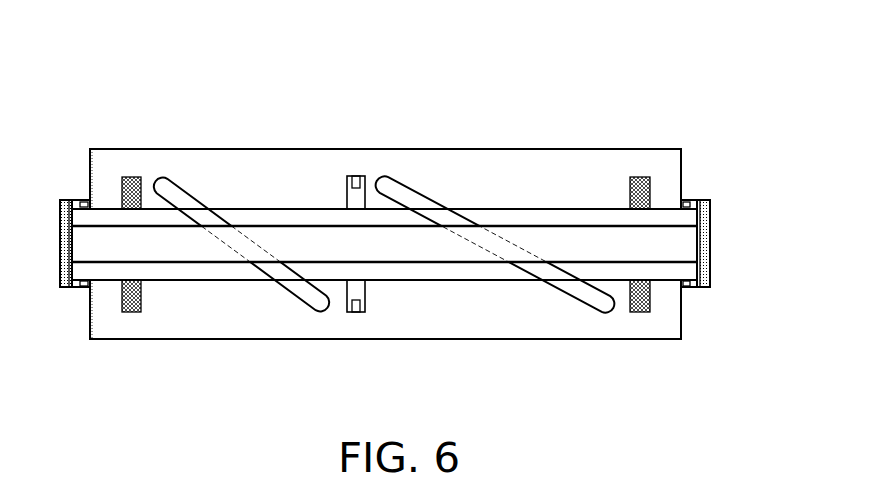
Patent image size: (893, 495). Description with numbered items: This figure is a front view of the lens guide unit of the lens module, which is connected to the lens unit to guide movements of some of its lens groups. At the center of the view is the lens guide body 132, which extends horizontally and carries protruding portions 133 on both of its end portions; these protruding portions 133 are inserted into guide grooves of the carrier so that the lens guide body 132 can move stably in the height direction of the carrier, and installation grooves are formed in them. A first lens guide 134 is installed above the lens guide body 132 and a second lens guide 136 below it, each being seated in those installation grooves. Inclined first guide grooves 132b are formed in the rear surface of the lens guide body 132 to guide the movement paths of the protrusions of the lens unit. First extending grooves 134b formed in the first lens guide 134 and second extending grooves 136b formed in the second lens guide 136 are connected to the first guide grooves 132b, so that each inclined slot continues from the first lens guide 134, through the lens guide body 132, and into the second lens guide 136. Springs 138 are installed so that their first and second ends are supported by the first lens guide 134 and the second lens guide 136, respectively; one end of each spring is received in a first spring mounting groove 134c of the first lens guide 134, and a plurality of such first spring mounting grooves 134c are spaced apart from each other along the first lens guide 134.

The lens guide body 132 is at (668, 247).
The first guide grooves 132b is at (493, 242).
The protruding portions 133 is at (692, 215).
The first lens guide 134 is at (270, 170).
The first extending grooves 134b is at (412, 197).
The first spring mounting grooves 134c is at (122, 192).
The second lens guide 136 is at (243, 328).
The second extending grooves 136b is at (575, 290).
The springs 138 is at (628, 193).